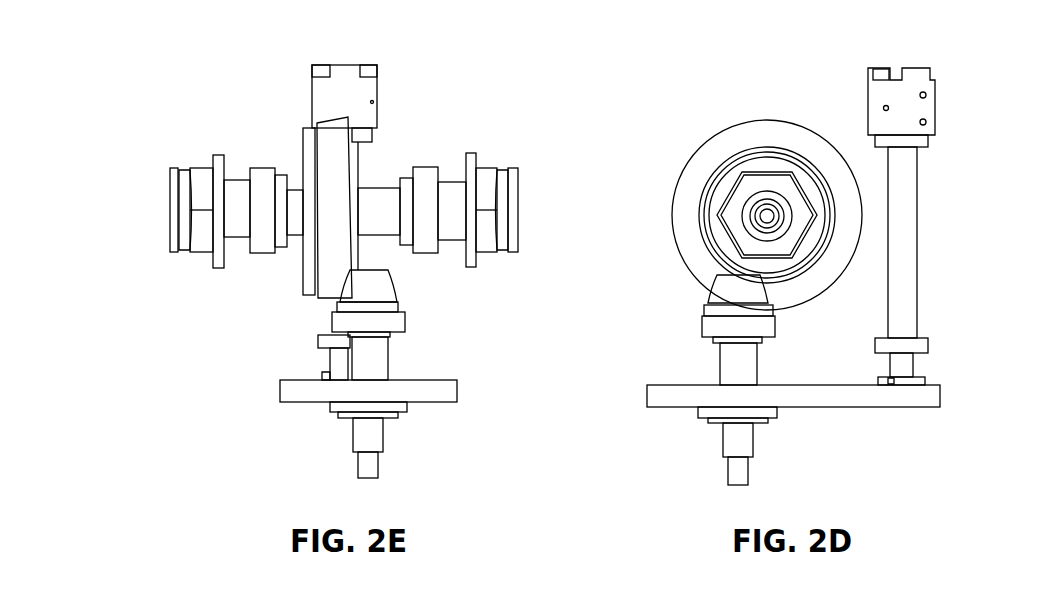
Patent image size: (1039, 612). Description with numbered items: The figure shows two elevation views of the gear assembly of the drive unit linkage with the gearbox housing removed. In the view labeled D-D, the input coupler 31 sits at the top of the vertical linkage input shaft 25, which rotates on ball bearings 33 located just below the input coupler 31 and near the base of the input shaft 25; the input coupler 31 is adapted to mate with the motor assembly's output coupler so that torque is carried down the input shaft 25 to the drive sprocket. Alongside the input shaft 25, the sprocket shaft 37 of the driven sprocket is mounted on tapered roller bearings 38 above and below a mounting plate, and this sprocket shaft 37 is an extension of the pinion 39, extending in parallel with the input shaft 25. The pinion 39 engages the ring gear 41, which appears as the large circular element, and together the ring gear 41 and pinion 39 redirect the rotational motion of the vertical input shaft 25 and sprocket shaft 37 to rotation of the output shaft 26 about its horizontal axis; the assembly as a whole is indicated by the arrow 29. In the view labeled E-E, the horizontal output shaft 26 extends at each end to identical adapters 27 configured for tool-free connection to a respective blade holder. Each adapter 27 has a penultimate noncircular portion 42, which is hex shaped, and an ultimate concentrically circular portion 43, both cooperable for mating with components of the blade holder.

In FIG. 2D, the input shaft 25 is at (918, 232).
In FIG. 2E, the output shaft 26 is at (377, 187).
In FIG. 2E, the adapters 27 is at (361, 267).
In FIG. 2D, the wheel assembly 29 is at (742, 405).
In FIG. 2D, the input coupler 31 is at (872, 68).
In FIG. 2D, the ball bearings 33 is at (928, 140).
In FIG. 2D, the sprocket shaft 37 is at (752, 470).
In FIG. 2D, the tapered roller bearings 38 is at (700, 328).
In FIG. 2D, the pinion 39 is at (712, 283).
In FIG. 2D, the ring gear 41 is at (718, 135).
In FIG. 2E, the penultimate noncircular portion 42 is at (203, 252).
In FIG. 2E, the ultimate concentrically circular portion 43 is at (182, 250).